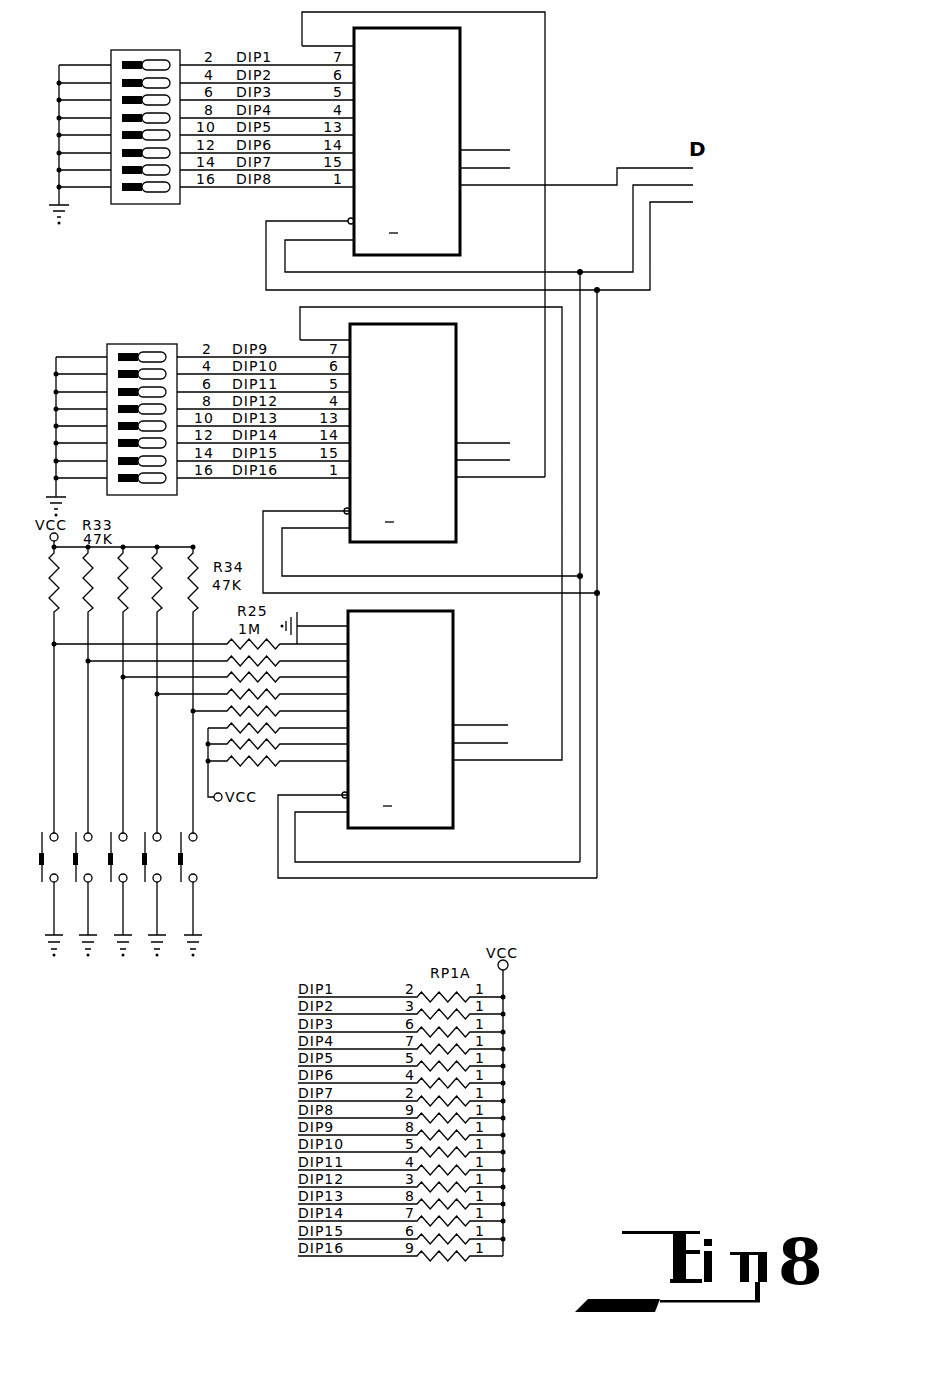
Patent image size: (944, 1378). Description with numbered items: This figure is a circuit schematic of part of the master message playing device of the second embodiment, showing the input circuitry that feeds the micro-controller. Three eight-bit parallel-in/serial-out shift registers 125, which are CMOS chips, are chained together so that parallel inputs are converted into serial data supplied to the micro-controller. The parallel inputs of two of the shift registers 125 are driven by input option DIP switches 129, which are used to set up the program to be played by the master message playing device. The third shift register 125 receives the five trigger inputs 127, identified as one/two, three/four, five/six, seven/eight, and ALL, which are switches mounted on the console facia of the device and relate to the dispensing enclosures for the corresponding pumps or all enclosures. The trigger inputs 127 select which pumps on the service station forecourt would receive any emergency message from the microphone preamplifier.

The parallel-in/serial-out shift registers 125 is at (452, 103).
The trigger inputs 127 is at (216, 878).
The input option DIP switches 129 is at (113, 205).